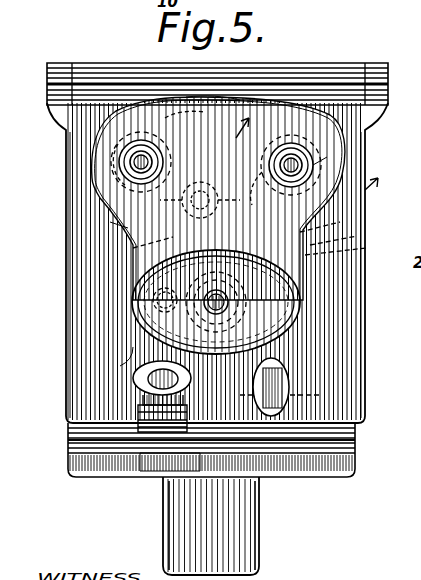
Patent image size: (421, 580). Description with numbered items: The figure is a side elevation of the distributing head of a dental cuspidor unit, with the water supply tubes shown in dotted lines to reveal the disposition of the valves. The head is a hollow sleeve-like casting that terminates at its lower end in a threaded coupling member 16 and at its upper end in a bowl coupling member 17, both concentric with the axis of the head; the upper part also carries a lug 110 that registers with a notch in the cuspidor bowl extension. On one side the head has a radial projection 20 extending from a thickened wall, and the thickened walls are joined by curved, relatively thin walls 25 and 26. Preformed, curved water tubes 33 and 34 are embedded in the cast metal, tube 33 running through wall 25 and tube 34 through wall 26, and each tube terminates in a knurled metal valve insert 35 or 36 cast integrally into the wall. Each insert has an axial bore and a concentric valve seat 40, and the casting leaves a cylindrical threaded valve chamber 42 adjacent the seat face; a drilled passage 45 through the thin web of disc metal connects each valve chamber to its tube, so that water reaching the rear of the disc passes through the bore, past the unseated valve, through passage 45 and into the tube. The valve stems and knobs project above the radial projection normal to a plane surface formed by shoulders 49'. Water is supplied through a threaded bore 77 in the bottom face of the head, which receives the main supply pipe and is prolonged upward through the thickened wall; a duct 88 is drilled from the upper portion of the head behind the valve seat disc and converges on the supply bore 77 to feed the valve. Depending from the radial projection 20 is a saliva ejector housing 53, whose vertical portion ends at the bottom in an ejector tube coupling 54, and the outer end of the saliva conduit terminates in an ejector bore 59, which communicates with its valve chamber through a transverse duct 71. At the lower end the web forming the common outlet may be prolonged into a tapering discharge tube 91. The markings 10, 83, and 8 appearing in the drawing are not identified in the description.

The casing 10 is at (217, 263).
The threaded coupling member 16 is at (355, 452).
The bowl coupling member 17 is at (343, 80).
The radial projection 20 is at (265, 310).
The curved wall 25 is at (133, 243).
The curved wall 26 is at (366, 248).
The conduit 33 is at (110, 222).
The conduit 34 is at (357, 236).
The valve insert 35 is at (178, 135).
The valve insert 36 is at (268, 162).
The valve seat 40 is at (168, 143).
The valve chamber 42 is at (157, 140).
The passage 45 is at (210, 200).
The shoulders 49' is at (360, 154).
The saliva ejector housing 53 is at (133, 381).
The ejector tube coupling 54 is at (143, 450).
The ejector housing bore 59 is at (140, 387).
The transverse duct 71 is at (228, 322).
The threaded bore 77 is at (200, 477).
The lever 83 is at (340, 220).
The duct 88 is at (133, 250).
The tapering discharge tube 91 is at (243, 536).
The lug 110 is at (190, 97).
The direction arrow 8 is at (305, 165).